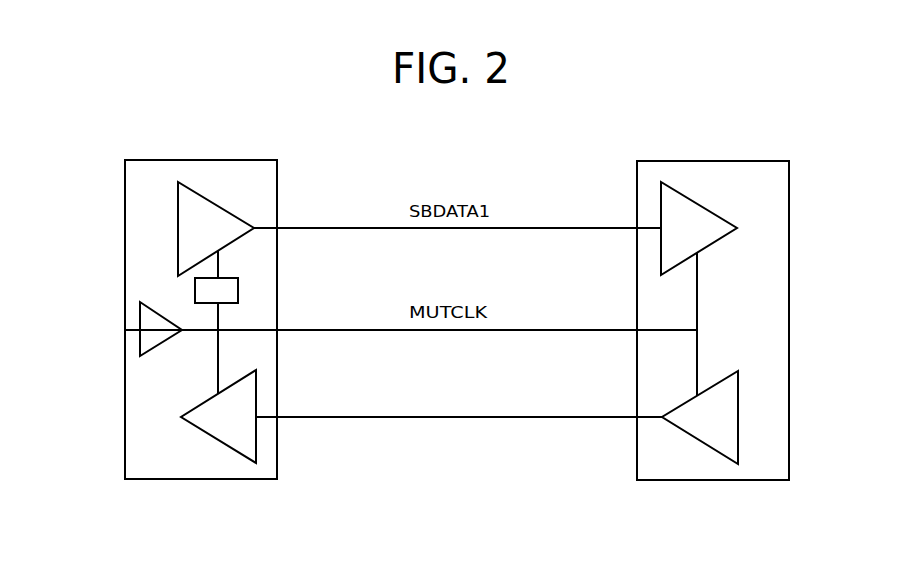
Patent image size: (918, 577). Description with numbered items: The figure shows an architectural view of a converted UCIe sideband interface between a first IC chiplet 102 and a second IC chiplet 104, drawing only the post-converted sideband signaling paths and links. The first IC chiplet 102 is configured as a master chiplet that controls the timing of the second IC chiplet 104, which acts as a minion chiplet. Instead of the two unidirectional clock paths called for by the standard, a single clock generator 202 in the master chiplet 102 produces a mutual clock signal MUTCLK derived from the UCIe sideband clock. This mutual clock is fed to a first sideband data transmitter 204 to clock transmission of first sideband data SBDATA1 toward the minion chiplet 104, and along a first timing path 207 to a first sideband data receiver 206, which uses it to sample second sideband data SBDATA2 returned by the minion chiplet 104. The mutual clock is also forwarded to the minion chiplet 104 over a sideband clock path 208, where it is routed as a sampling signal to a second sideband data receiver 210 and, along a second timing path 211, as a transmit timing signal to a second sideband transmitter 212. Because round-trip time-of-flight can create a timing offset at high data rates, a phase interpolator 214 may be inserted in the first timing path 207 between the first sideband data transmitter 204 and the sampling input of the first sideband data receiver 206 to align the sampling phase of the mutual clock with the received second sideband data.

The first IC chiplet 102 is at (125, 187).
The second IC chiplet 104 is at (789, 187).
The clock generator 202 is at (125, 330).
The first sideband data transmitter 204 is at (207, 199).
The first sideband data receiver 206 is at (235, 453).
The first timing path 207 is at (218, 363).
The sideband clock path 208 is at (485, 417).
The second sideband data receiver 210 is at (688, 193).
The second timing path 211 is at (697, 297).
The second sideband transmitter 212 is at (707, 447).
The phase interpolator 214 is at (238, 287).